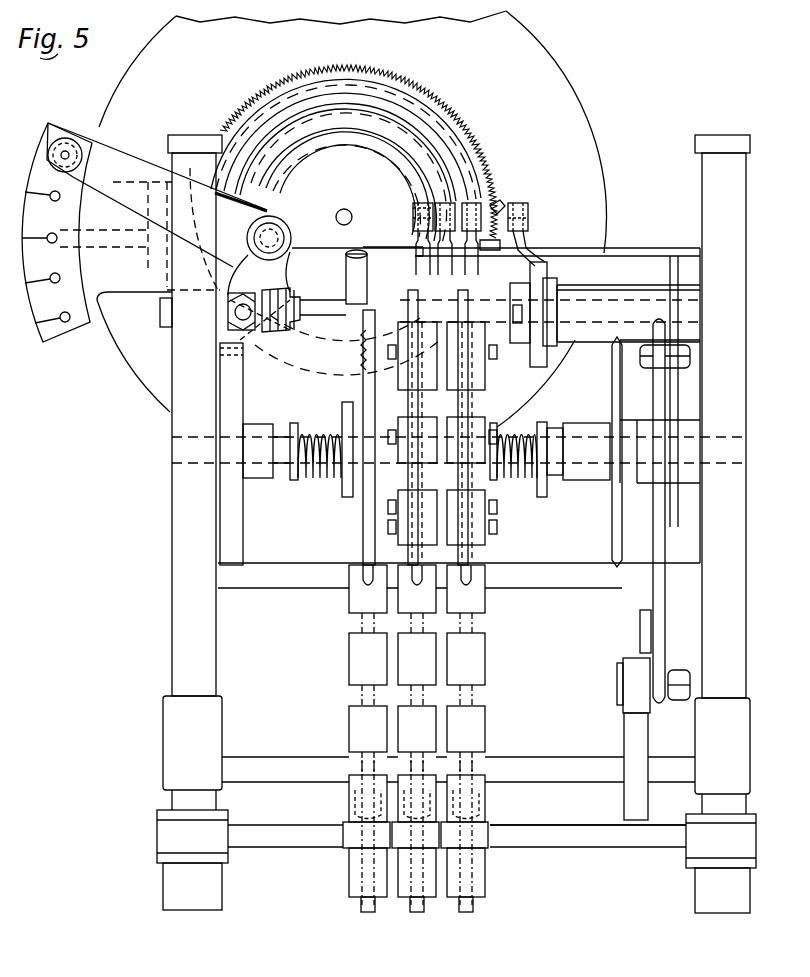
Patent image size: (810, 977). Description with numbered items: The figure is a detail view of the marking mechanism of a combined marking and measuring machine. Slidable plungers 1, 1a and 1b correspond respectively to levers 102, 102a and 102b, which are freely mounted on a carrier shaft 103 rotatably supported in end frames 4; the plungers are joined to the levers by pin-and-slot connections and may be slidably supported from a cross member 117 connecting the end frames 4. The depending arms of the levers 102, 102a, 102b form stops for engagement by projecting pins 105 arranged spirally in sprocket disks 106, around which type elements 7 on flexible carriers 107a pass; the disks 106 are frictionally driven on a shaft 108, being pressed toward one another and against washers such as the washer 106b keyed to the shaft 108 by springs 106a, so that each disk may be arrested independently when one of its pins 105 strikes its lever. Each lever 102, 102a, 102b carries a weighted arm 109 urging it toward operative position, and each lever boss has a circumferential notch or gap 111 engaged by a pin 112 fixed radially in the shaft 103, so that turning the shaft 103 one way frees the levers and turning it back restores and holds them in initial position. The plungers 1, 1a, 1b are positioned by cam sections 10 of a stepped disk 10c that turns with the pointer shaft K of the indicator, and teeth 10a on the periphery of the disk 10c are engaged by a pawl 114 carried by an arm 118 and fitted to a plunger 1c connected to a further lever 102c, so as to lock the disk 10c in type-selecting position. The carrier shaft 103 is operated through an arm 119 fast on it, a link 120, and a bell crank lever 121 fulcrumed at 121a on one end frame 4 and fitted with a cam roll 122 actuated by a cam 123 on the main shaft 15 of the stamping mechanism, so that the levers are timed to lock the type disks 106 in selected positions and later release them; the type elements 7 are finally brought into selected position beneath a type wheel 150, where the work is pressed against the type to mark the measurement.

The end frames 4 is at (700, 186).
The type elements 7 is at (477, 658).
The cam section 10 is at (395, 155).
The teeth 10a is at (482, 156).
The stepped disk 10c is at (270, 92).
The slidable plunger 1 is at (414, 220).
The slidable plunger 1a is at (414, 196).
The slidable plunger 1b is at (482, 194).
The plunger 1c is at (530, 220).
The pointer shaft K is at (345, 208).
The main shaft 15 is at (580, 778).
The lever 102 is at (376, 284).
The lever 102a is at (410, 258).
The lever 102b is at (528, 262).
The further lever 102c is at (552, 285).
The carrier shaft 103 is at (640, 298).
The projecting pins 105 is at (392, 372).
The sprocket disks 106 is at (375, 550).
The springs 106a is at (337, 478).
The washer 106b is at (342, 410).
The flexible carriers 107a is at (468, 694).
The shaft 108 is at (575, 440).
The weighted arm 109 is at (540, 354).
The notches or gaps 111 is at (512, 304).
The pin 112 is at (522, 306).
The pawl 114 is at (500, 208).
The cross member 117 is at (630, 250).
The arm 118 is at (520, 248).
The arm 119 is at (655, 365).
The link 120 is at (668, 416).
The bell crank lever 121 is at (650, 596).
The fulcrum 121a is at (640, 638).
The cam roll 122 is at (628, 670).
The cam 123 is at (630, 733).
The type wheel 150 is at (352, 804).